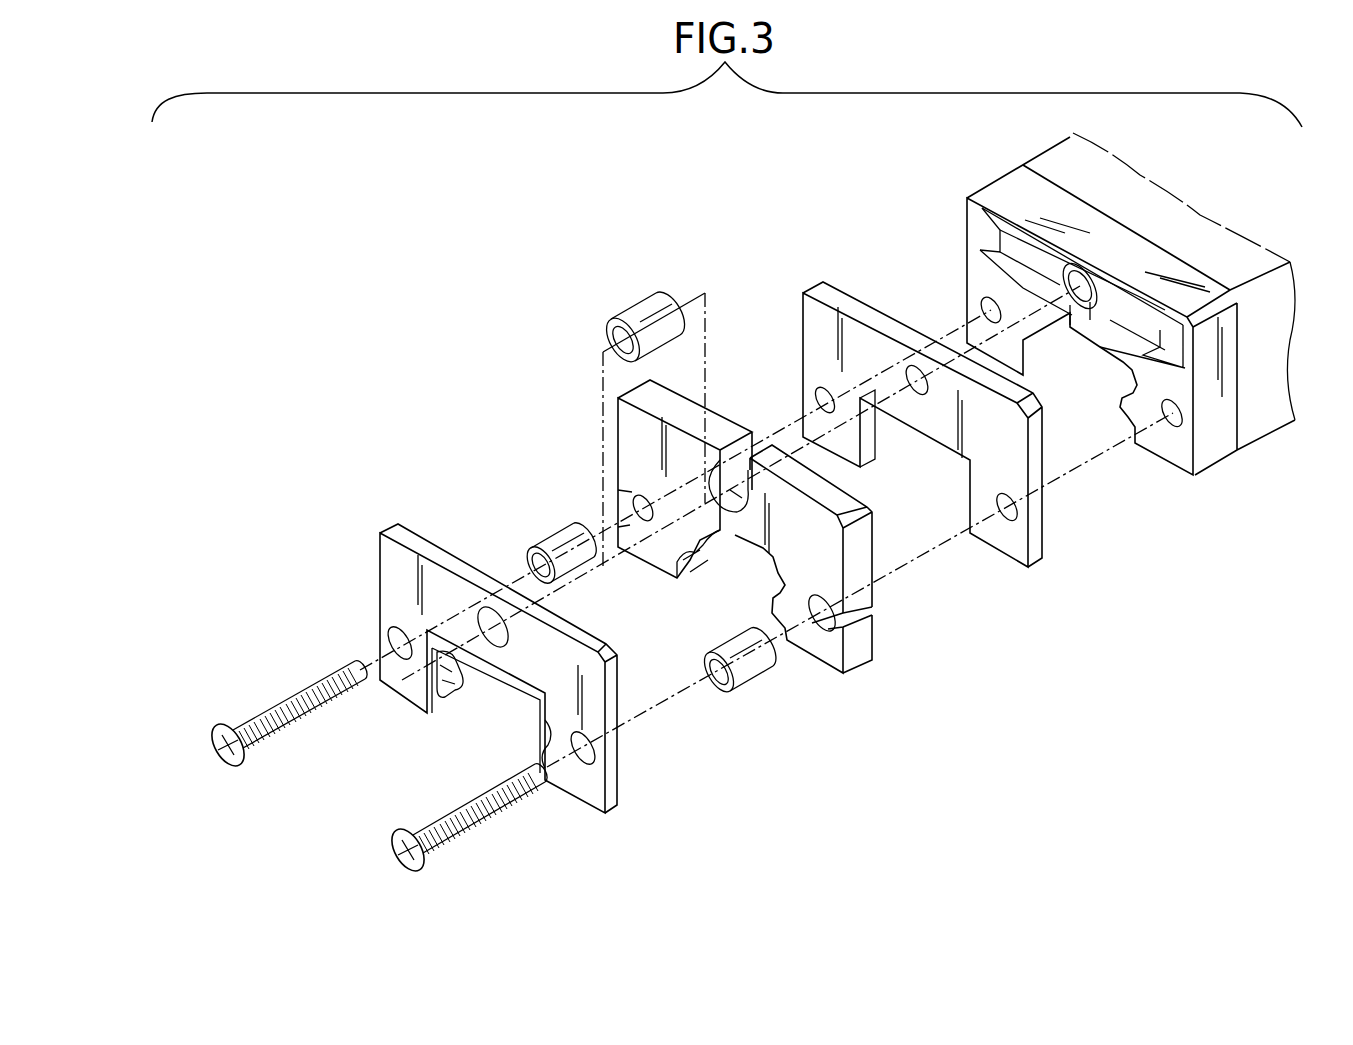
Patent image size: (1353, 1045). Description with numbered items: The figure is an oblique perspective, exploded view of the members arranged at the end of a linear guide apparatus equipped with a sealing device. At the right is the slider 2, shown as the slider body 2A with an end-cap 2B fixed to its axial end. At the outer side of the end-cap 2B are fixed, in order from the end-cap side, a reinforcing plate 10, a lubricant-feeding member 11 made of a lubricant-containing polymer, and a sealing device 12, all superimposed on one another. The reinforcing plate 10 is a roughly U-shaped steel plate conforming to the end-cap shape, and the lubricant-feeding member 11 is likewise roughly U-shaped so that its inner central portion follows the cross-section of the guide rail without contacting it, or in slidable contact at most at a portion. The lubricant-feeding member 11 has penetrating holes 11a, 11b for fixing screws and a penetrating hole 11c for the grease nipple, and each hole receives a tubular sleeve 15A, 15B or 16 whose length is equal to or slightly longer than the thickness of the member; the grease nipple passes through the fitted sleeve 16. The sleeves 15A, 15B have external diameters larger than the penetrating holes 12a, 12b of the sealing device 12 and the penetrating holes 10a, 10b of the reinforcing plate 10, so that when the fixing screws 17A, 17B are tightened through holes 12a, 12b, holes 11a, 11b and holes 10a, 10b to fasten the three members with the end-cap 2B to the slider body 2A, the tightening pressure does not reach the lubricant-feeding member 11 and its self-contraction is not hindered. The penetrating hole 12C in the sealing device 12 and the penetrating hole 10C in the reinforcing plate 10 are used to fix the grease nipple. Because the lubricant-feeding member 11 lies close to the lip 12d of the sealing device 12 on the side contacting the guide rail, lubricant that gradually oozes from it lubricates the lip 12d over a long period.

The slider 2 is at (1131, 286).
The slider body 2A is at (1073, 132).
The end-cap 2B is at (1012, 187).
The reinforcing plate 10 is at (925, 444).
The penetrating hole 10a is at (1003, 525).
The penetrating hole 10b is at (815, 398).
The penetrating hole 10C is at (908, 385).
The lubricant-feeding member 11 is at (778, 545).
The penetrating hole 11a is at (822, 632).
The penetrating hole 11b is at (640, 525).
The penetrating hole 11c is at (738, 512).
The sealing device 12 is at (500, 692).
The penetrating hole 12a is at (582, 768).
The penetrating hole 12b is at (383, 638).
The penetrating hole 12C is at (485, 604).
The lip 12d is at (437, 693).
The tubular sleeve 15A is at (749, 670).
The tubular sleeve 15B is at (560, 537).
The tubular sleeve 16 is at (643, 310).
The fixing screw 17A is at (443, 817).
The fixing screw 17B is at (268, 708).